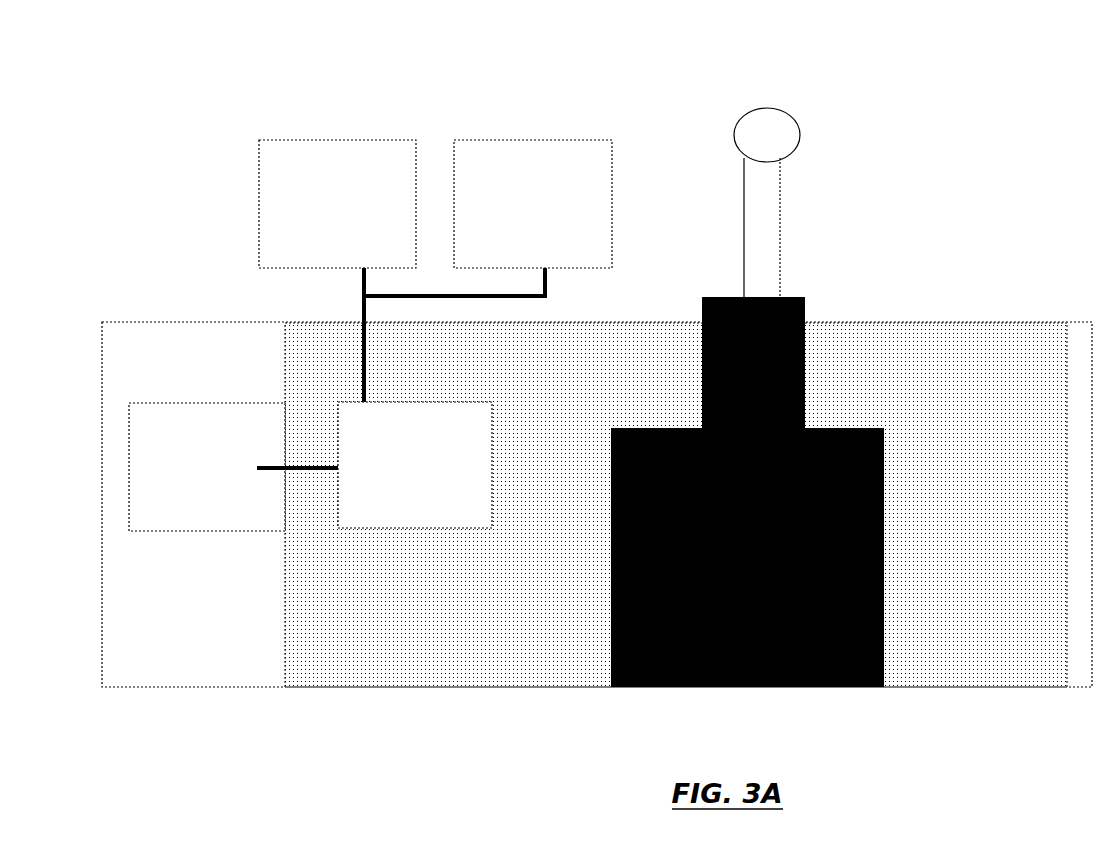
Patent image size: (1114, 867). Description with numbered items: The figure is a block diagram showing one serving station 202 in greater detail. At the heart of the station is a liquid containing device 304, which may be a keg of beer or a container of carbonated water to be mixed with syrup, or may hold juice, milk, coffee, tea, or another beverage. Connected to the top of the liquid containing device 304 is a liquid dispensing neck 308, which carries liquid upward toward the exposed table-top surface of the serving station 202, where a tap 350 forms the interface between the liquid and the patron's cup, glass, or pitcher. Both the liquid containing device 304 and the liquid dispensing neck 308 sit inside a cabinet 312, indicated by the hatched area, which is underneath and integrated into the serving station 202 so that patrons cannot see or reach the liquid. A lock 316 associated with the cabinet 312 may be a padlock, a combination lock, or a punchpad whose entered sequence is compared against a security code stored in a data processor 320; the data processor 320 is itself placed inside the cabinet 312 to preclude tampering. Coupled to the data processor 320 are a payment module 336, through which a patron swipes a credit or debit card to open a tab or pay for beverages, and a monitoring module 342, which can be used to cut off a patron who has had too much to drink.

The serving station 202 is at (177, 319).
The liquid containing device 304 is at (827, 687).
The liquid dispensing neck 308 is at (813, 403).
The cabinet 312 is at (453, 687).
The lock 316 is at (207, 467).
The data processor 320 is at (374, 465).
The payment module 336 is at (337, 271).
The monitoring module 342 is at (488, 218).
The tap 350 is at (767, 205).